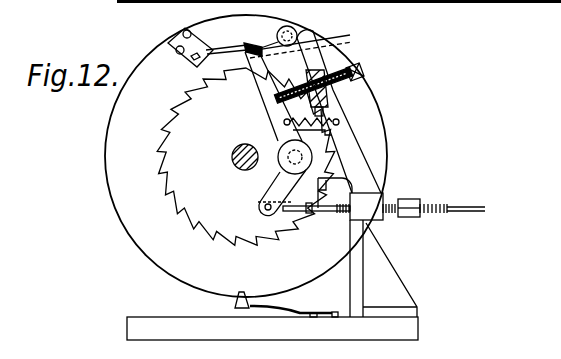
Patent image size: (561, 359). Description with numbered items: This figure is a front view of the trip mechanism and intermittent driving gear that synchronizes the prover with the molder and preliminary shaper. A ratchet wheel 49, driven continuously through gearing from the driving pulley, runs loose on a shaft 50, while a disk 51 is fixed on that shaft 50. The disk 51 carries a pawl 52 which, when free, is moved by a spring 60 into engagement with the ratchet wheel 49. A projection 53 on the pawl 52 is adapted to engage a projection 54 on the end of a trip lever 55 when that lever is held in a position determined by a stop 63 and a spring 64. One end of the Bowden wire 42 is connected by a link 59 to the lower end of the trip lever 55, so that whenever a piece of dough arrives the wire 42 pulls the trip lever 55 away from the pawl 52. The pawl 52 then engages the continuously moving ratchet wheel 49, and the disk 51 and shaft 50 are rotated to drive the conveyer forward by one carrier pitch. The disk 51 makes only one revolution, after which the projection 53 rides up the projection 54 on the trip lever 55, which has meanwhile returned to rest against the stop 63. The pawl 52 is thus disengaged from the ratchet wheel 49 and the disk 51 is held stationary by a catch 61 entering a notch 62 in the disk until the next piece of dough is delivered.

The Bowden wire 42 is at (314, 214).
The ratchet wheel 49 is at (246, 156).
The shaft 50 is at (232, 156).
The disk 51 is at (117, 148).
The pawl 52 is at (298, 37).
The projection 53 is at (338, 38).
The projection 54 is at (355, 42).
The trip lever 55 is at (265, 97).
The link 59 is at (291, 207).
The spring 60 is at (253, 50).
The catch 61 is at (215, 303).
The notch 62 is at (240, 292).
The stop 63 is at (363, 78).
The spring 64 is at (339, 120).